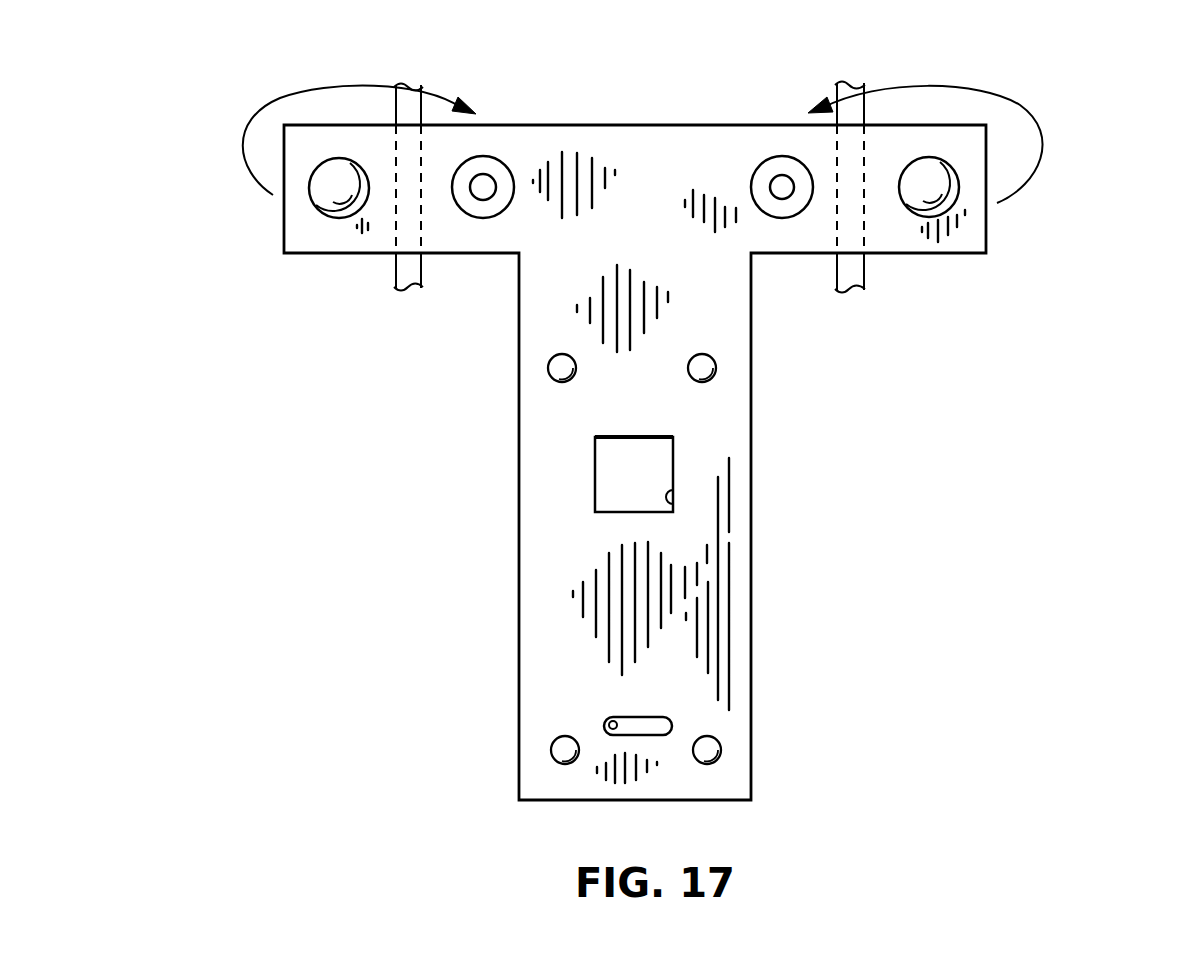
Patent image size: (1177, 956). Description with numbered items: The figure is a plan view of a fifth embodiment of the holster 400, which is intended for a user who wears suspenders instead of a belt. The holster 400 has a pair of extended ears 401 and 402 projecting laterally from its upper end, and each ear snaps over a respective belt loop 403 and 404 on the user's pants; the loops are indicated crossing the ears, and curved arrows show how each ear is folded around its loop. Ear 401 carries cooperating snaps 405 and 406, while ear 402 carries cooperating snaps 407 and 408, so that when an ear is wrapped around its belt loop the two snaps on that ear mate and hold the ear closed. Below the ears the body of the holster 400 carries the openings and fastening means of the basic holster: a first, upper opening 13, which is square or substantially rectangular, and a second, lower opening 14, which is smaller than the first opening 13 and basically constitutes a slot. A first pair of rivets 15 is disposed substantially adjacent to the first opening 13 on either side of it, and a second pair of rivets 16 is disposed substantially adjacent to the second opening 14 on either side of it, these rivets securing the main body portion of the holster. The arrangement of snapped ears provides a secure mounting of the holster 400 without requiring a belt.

The holster 400 is at (465, 490).
The ear 401 is at (293, 243).
The ear 402 is at (975, 243).
The belt loop 403 is at (396, 288).
The belt loop 404 is at (861, 290).
The snap 405 is at (312, 205).
The snap 406 is at (497, 157).
The snap 407 is at (958, 200).
The snap 408 is at (765, 157).
The first opening 13 is at (675, 507).
The second opening 14 is at (612, 722).
The first pair of rivets 15 is at (549, 376).
The second pair of rivets 16 is at (548, 750).